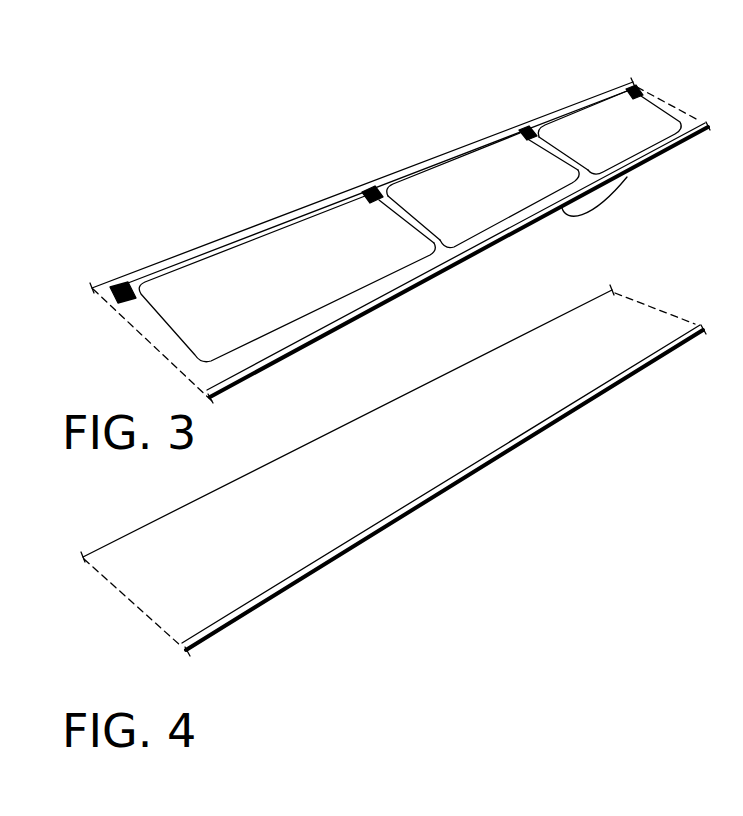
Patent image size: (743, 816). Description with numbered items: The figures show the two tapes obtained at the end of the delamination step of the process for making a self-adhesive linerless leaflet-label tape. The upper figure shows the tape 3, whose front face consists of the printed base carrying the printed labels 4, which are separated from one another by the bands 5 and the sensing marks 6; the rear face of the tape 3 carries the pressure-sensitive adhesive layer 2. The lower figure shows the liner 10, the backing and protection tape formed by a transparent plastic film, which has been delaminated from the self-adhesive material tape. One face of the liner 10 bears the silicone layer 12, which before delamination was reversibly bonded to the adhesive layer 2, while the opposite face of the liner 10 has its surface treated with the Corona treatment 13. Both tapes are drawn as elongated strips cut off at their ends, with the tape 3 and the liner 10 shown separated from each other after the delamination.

In FIG. 3, the pressure-sensitive adhesive layer 2 is at (562, 208).
In FIG. 3, the tape 3 is at (266, 215).
In FIG. 3, the printed labels 4 is at (233, 307).
In FIG. 3, the bands 5 is at (402, 217).
In FIG. 3, the sensing marks 6 is at (123, 282).
In FIG. 4, the liner 10 is at (351, 509).
In FIG. 4, the silicone layer 12 is at (430, 447).
In FIG. 4, the Corona treatment 13 is at (613, 380).